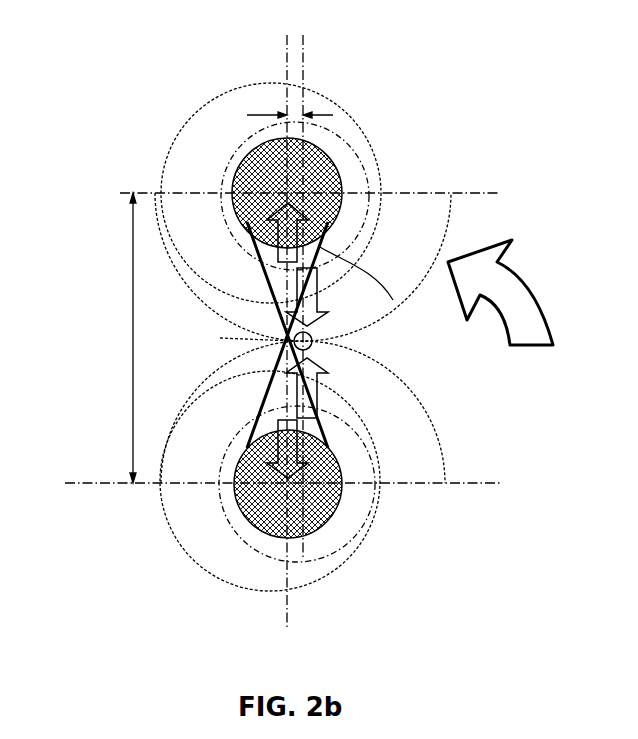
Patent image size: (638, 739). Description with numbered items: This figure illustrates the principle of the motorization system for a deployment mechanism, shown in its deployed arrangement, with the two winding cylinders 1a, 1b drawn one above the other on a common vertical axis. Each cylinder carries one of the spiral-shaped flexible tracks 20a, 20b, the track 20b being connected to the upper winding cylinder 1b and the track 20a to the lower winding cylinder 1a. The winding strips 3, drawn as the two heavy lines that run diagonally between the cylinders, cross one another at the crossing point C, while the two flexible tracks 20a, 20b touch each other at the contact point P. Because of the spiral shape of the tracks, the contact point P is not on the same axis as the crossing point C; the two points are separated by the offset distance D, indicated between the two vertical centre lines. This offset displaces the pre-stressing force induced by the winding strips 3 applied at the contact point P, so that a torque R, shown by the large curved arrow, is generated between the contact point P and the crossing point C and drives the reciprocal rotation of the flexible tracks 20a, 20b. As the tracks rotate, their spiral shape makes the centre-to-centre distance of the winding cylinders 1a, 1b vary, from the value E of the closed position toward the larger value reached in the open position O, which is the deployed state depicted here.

The flexible track 20b is at (185, 133).
The flexible track 20a is at (173, 522).
The winding cylinder 1b is at (320, 177).
The winding cylinder 1a is at (253, 523).
The crossing point C is at (220, 338).
The contact point P is at (317, 343).
The winding strips 3 is at (397, 307).
The open position O is at (118, 142).
The offset distance D is at (263, 115).
The centre-to-centre distance E is at (133, 345).
The torque R is at (500, 292).